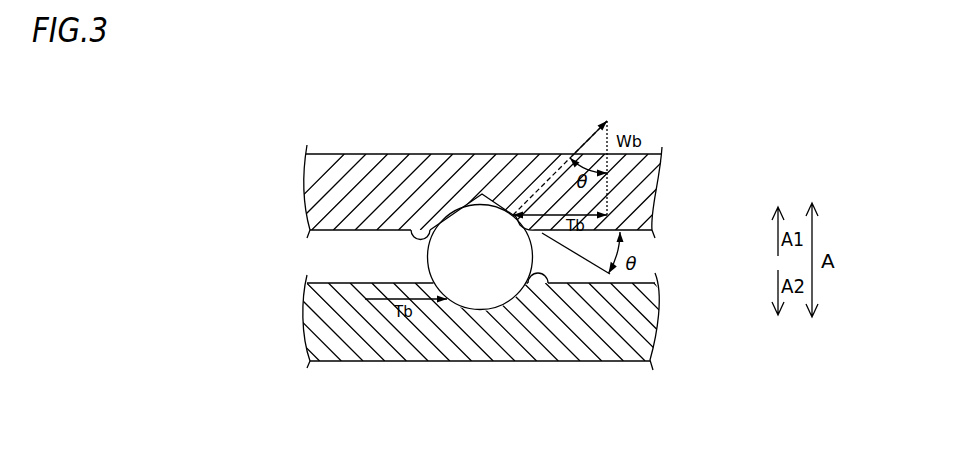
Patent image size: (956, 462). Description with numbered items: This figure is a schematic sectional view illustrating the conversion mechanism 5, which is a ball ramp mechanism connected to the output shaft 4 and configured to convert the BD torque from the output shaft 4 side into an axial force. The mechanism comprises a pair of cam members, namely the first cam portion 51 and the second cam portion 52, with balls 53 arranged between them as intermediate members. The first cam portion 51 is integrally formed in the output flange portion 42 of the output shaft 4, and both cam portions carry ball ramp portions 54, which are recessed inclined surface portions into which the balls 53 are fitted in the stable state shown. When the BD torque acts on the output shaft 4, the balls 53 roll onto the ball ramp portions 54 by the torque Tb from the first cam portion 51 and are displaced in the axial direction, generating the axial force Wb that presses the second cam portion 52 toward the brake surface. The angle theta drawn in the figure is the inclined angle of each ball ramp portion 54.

The conversion mechanism 5 is at (320, 127).
The second cam portion 52 is at (353, 173).
The balls 53 is at (476, 226).
The ball ramp portions 54 is at (410, 229).
The first cam portion 51 is at (487, 344).
The output flange portion 42 is at (487, 344).
The output shaft 4 is at (372, 350).